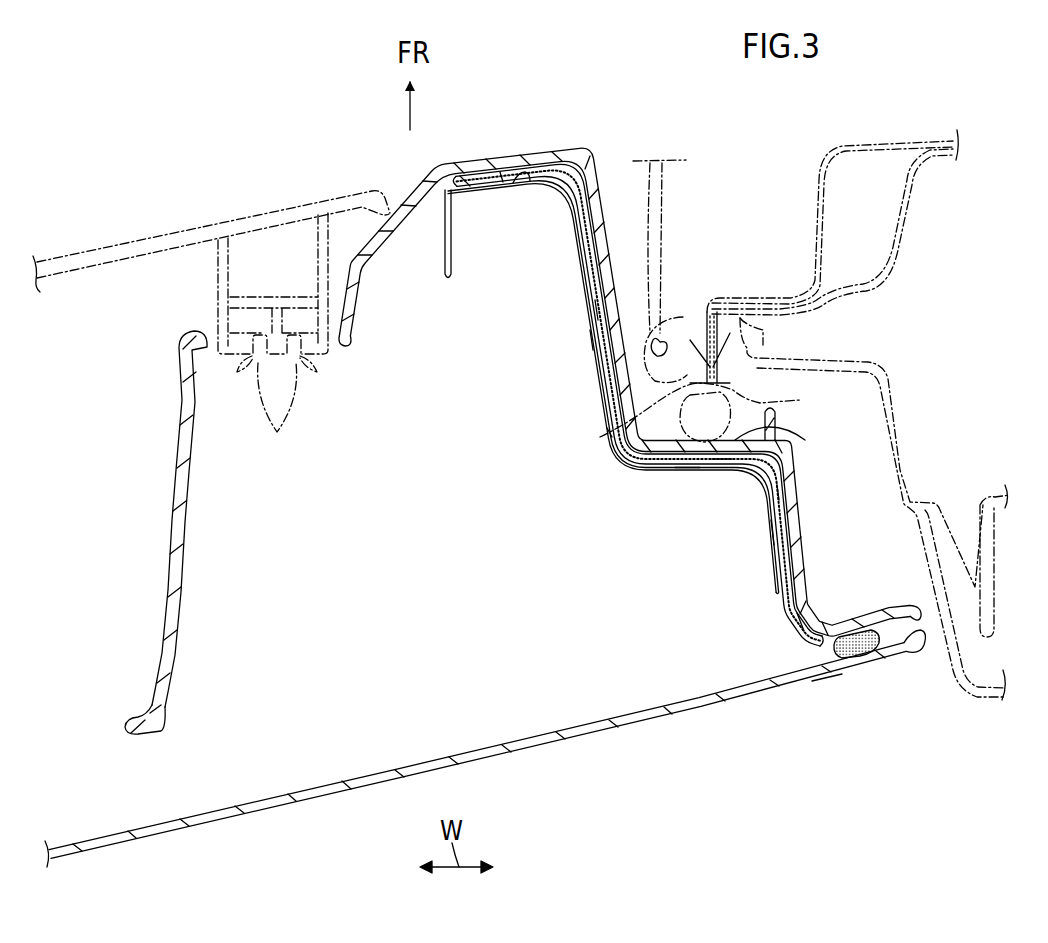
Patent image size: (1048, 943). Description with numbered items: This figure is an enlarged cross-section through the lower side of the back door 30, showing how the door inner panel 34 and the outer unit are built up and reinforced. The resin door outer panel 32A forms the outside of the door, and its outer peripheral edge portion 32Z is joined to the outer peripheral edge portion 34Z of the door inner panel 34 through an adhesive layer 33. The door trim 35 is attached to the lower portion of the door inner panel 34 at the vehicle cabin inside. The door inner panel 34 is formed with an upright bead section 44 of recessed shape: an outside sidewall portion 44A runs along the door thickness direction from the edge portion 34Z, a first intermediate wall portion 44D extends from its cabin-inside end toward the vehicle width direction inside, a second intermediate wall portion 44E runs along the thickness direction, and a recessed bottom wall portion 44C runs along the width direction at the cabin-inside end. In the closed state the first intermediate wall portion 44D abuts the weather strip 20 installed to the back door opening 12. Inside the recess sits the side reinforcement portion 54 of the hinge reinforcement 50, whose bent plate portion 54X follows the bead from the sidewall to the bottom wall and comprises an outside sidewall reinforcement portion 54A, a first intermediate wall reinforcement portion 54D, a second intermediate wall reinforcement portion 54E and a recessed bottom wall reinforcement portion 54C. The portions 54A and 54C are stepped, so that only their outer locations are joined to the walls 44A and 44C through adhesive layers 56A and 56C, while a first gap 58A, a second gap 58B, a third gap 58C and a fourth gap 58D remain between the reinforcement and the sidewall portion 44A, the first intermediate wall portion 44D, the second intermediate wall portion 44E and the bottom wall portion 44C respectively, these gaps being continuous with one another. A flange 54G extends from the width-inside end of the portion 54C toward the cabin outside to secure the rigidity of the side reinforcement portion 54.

The back door 30 is at (745, 752).
The door outer panel 32A is at (522, 762).
The outer peripheral edge portion of the outer unit 32Z is at (869, 657).
The adhesive layer 33 is at (820, 677).
The door inner panel 34 is at (602, 152).
The outer peripheral edge portion of the door inner panel 34Z is at (848, 637).
The door trim 35 is at (263, 217).
The upright bead section 44 is at (200, 708).
The outside sidewall portion 44A is at (803, 519).
The recessed bottom wall portion 44C is at (522, 158).
The first intermediate wall portion 44D is at (775, 437).
The second intermediate wall portion 44E is at (614, 283).
The side reinforcement portion 54 is at (639, 379).
The hinge reinforcement 50 is at (745, 588).
The outside sidewall reinforcement portion 54A is at (774, 527).
The recessed bottom wall reinforcement portion 54C is at (484, 193).
The first intermediate wall reinforcement portion 54D is at (688, 470).
The second intermediate wall reinforcement portion 54E is at (597, 318).
The flange 54G is at (445, 245).
The bent plate portion 54X is at (520, 190).
The adhesive layer 56A is at (800, 630).
The adhesive layer 56C is at (468, 178).
The first gap 58A is at (777, 490).
The second gap 58B is at (720, 464).
The third gap 58C is at (591, 343).
The fourth gap 58D is at (527, 162).
The back door opening 12 is at (612, 430).
The weather strip 20 is at (748, 400).